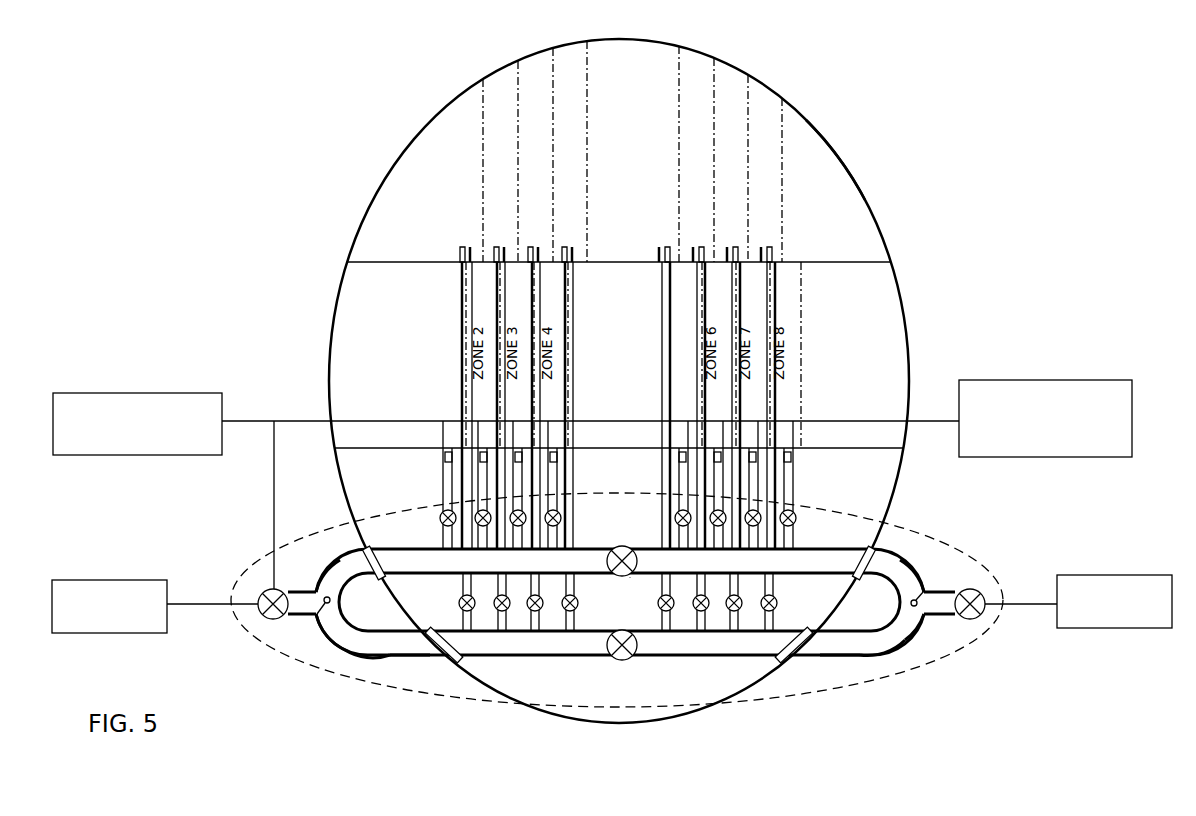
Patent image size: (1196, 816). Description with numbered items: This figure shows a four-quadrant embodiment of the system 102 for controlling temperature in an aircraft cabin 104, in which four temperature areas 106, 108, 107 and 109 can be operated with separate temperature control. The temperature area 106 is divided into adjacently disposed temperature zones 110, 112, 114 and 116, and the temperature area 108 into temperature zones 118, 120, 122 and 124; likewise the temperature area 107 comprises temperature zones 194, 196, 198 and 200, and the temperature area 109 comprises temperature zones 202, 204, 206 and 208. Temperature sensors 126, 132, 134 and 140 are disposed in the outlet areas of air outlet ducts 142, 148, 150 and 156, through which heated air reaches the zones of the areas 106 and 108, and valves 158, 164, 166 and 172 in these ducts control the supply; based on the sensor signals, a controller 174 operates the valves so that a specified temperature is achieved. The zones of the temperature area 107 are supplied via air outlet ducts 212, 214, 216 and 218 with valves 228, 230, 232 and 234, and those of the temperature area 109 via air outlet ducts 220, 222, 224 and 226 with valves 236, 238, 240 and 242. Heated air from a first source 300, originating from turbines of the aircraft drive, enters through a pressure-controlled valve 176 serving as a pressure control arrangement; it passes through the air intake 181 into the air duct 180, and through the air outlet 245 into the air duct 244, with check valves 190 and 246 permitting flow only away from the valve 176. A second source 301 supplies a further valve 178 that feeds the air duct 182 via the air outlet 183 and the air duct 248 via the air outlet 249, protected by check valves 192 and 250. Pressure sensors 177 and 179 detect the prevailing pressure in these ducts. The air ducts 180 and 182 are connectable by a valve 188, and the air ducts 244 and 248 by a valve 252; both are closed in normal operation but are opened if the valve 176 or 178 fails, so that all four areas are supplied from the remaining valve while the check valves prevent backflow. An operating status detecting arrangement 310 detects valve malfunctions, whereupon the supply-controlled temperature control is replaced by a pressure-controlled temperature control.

The system 102 is at (978, 558).
The aircraft cabin 104 is at (893, 270).
The temperature area 106 is at (358, 332).
The temperature area 107 is at (396, 197).
The temperature area 108 is at (886, 331).
The temperature area 109 is at (827, 183).
The temperature zone 110 is at (383, 347).
The temperature zone 112 is at (477, 303).
The temperature zone 114 is at (508, 282).
The temperature zone 116 is at (547, 292).
The temperature zone 118 is at (608, 348).
The temperature zone 120 is at (715, 308).
The temperature zone 122 is at (747, 282).
The temperature zone 124 is at (787, 293).
The temperature sensor 126 is at (445, 458).
The temperature sensor 132 is at (555, 462).
The temperature sensor 134 is at (677, 462).
The temperature sensor 140 is at (799, 453).
The air outlet duct 142 is at (442, 487).
The air outlet duct 148 is at (552, 484).
The air outlet duct 150 is at (680, 474).
The air outlet duct 156 is at (791, 490).
The valve 158 is at (441, 518).
The valve 164 is at (561, 513).
The valve 166 is at (674, 513).
The valve 172 is at (792, 517).
The controller 174 is at (133, 393).
The pressure-controlled valve 176 is at (262, 614).
The pressure sensor 177 is at (323, 604).
The valve 178 is at (982, 613).
The pressure sensor 179 is at (919, 588).
The air duct 180 is at (620, 575).
The air intake 181 is at (333, 574).
The air duct 182 is at (620, 604).
The air outlet 183 is at (901, 567).
The valve 188 is at (639, 577).
The check valve 190 is at (370, 547).
The check valve 192 is at (880, 541).
The temperature zone 194 is at (462, 102).
The temperature zone 196 is at (495, 80).
The temperature zone 198 is at (530, 62).
The temperature zone 200 is at (572, 42).
The temperature zone 202 is at (624, 112).
The temperature zone 204 is at (692, 55).
The temperature zone 206 is at (731, 71).
The temperature zone 208 is at (768, 96).
The air outlet duct 212 is at (463, 582).
The air outlet duct 214 is at (460, 653).
The air outlet duct 216 is at (533, 590).
The air outlet duct 218 is at (572, 591).
The air outlet duct 220 is at (661, 537).
The air outlet duct 222 is at (700, 473).
The air outlet duct 224 is at (735, 582).
The air outlet duct 226 is at (812, 645).
The valve 228 is at (455, 607).
The valve 230 is at (503, 612).
The valve 232 is at (537, 612).
The valve 234 is at (571, 612).
The valve 236 is at (665, 612).
The valve 238 is at (700, 612).
The valve 240 is at (735, 612).
The valve 242 is at (778, 604).
The air duct 244 is at (380, 651).
The air outlet 245 is at (342, 650).
The check valve 246 is at (437, 646).
The air duct 248 is at (893, 650).
The air outlet 249 is at (921, 632).
The check valve 250 is at (850, 656).
The valve 252 is at (631, 659).
The first source of heated air 300 is at (107, 580).
The second source of hot air 301 is at (1113, 575).
The operating status detecting arrangement 310 is at (1036, 380).